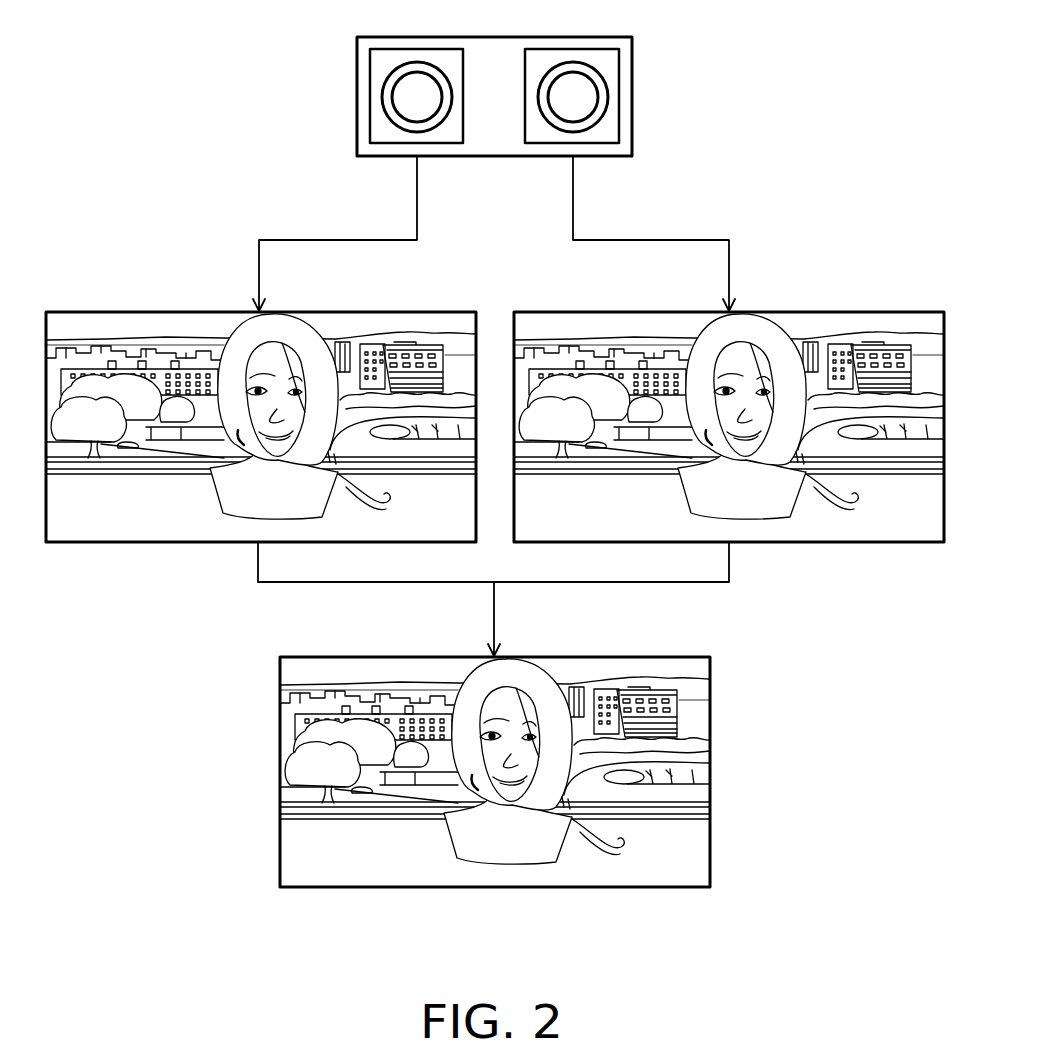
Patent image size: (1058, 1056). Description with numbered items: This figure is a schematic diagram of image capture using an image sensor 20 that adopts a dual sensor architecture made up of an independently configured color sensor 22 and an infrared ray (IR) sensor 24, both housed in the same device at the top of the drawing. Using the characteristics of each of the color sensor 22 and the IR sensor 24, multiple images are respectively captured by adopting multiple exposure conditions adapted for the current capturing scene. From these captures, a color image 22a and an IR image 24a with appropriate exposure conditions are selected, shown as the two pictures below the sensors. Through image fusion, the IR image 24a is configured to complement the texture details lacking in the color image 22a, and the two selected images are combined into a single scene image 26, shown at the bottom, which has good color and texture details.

The image sensor 20 is at (577, 37).
The color sensor 22 is at (403, 97).
The infrared ray (IR) sensor 24 is at (585, 97).
The color image 22a is at (420, 312).
The IR image 24a is at (890, 312).
The scene image 26 is at (657, 657).